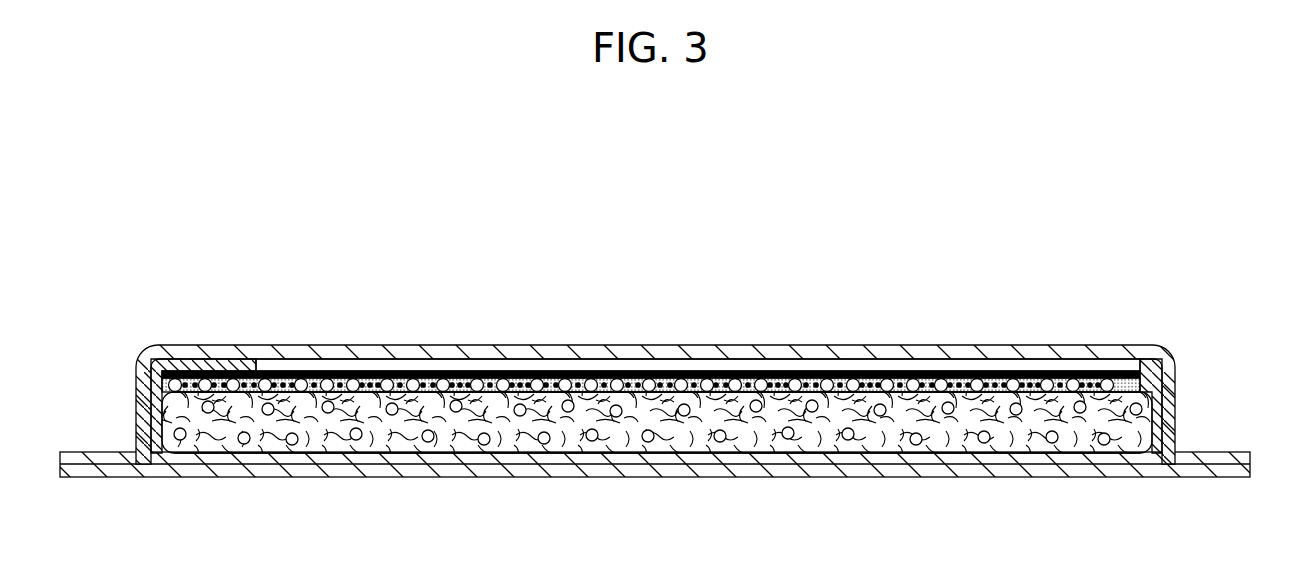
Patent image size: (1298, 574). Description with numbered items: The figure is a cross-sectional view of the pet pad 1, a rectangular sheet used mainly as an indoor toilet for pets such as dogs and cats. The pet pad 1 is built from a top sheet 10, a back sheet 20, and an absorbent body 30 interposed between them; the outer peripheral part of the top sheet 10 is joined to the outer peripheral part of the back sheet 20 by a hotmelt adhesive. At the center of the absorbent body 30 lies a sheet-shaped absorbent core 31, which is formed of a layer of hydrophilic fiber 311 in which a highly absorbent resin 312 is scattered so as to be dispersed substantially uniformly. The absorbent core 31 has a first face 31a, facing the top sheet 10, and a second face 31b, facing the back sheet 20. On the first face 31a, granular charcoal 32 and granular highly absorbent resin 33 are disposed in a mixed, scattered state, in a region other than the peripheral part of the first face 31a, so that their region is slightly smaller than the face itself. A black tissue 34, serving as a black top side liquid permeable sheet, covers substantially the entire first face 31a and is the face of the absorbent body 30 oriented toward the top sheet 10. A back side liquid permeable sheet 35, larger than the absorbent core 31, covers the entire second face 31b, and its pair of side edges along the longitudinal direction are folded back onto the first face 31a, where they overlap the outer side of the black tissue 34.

The pet pad 1 is at (468, 262).
The top sheet 10 is at (196, 345).
The back sheet 20 is at (175, 478).
The absorbent body 30 is at (718, 398).
The absorbent core 31 is at (724, 415).
The first face 31a is at (368, 390).
The second face 31b is at (370, 453).
The hydrophilic fiber 311 is at (1147, 428).
The highly absorbent resin 312 is at (1133, 405).
The charcoal 32 is at (696, 350).
The highly absorbent resin 33 is at (1127, 383).
The black tissue 34 is at (1092, 372).
The back side liquid permeable sheet 35 is at (1063, 365).